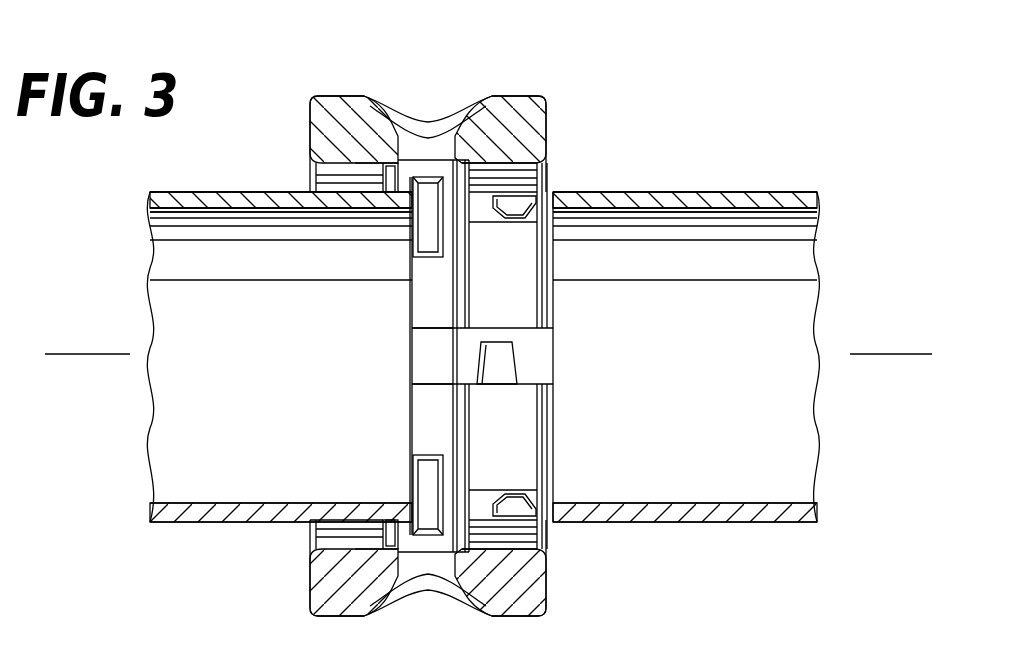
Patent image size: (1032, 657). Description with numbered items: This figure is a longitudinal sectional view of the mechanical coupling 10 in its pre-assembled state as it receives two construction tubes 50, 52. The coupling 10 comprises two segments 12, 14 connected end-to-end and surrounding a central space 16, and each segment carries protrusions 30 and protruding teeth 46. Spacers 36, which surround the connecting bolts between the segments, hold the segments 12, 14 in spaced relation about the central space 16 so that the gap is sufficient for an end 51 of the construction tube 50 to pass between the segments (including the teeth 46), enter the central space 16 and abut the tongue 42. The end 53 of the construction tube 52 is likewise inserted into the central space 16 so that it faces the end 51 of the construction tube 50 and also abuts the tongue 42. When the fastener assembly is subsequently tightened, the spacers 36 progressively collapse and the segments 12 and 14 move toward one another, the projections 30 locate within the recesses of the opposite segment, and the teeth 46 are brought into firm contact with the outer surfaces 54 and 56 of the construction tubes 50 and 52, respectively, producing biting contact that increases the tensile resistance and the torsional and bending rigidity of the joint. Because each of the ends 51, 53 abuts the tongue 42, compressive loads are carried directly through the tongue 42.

The mechanical coupling 10 is at (420, 311).
The segment 12 is at (312, 142).
The segment 14 is at (310, 582).
The central space 16 is at (470, 356).
The protrusion 30 is at (497, 374).
The spacer 36 is at (425, 368).
The tongue 42 is at (404, 258).
The tooth 46 is at (520, 200).
The construction tube 50 is at (258, 384).
The end 51 is at (410, 432).
The construction tube 52 is at (763, 398).
The end 53 is at (556, 354).
The outer surface 54 is at (165, 192).
The outer surface 56 is at (642, 192).